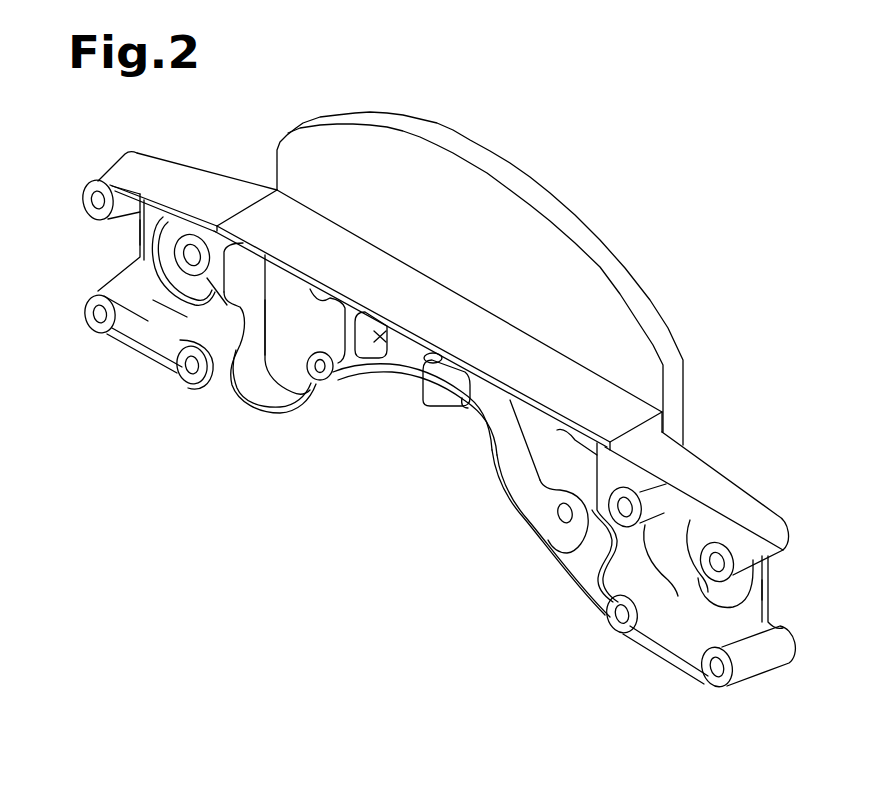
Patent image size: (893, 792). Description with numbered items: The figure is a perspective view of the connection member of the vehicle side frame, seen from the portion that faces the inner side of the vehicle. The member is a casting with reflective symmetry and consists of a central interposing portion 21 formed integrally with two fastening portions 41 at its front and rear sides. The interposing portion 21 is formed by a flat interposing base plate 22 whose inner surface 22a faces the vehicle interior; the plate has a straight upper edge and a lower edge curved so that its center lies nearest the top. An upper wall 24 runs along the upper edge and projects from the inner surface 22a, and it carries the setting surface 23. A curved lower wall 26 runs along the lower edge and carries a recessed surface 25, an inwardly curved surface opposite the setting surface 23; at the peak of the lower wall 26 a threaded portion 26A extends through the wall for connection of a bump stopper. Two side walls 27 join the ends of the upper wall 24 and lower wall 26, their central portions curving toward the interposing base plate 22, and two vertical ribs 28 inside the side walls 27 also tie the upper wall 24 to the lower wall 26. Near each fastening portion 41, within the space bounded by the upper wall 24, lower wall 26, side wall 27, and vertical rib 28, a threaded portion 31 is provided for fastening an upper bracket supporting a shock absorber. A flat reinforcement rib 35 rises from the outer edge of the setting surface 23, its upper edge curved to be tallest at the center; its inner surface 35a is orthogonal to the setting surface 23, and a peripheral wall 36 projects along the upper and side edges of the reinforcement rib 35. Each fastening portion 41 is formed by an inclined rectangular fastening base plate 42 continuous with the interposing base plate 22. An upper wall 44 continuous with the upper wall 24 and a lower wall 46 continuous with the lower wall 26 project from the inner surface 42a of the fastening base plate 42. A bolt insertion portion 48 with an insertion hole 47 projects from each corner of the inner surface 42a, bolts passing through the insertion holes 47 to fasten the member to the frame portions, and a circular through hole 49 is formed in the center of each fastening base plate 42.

The interposing portion 21 is at (392, 532).
The interposing base plate 22 is at (268, 360).
The inner surface 22a is at (286, 372).
The setting surface 23 is at (263, 205).
The upper wall 24 is at (583, 380).
The recessed surface 25 is at (355, 380).
The lower wall 26 is at (497, 487).
The threaded portion 26A is at (425, 368).
The side wall 27 is at (258, 370).
The vertical rib 28 is at (381, 348).
The threaded portion 31 is at (318, 385).
The reinforcement rib 35 is at (598, 278).
The inner surface 35a is at (565, 245).
The peripheral wall 36 is at (524, 180).
The fastening portion 41 is at (125, 382).
The fastening base plate 42 is at (138, 264).
The inner surface 42a is at (138, 237).
The upper wall 44 is at (141, 165).
The lower wall 46 is at (115, 342).
The insertion hole 47 is at (185, 238).
The bolt insertion portion 48 is at (106, 180).
The circular through hole 49 is at (172, 283).